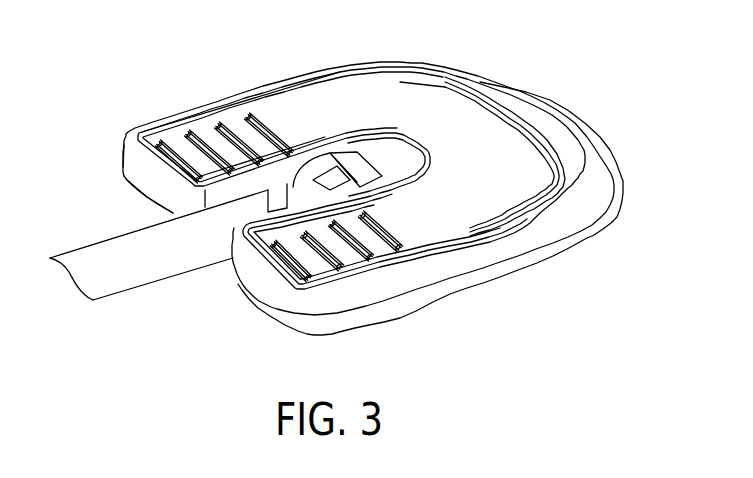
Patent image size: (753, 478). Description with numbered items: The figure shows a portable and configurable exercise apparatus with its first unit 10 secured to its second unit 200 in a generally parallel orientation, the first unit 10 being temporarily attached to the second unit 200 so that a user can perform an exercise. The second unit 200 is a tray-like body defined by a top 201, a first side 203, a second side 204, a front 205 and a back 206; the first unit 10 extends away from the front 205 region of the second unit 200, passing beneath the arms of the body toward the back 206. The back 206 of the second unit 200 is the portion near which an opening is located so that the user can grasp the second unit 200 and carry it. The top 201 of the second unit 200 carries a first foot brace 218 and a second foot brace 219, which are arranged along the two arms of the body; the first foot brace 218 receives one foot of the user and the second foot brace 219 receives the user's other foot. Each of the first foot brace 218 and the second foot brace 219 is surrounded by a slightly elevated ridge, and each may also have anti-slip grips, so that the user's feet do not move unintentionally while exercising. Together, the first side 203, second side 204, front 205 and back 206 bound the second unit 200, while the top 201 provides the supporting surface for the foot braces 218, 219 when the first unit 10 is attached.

The first unit 10 is at (150, 267).
The second unit 200 is at (463, 110).
The top 201 is at (327, 90).
The first side 203 is at (522, 268).
The second side 204 is at (166, 117).
The front 205 is at (157, 188).
The back 206 is at (569, 121).
The first foot brace 218 is at (247, 133).
The second foot brace 219 is at (352, 257).